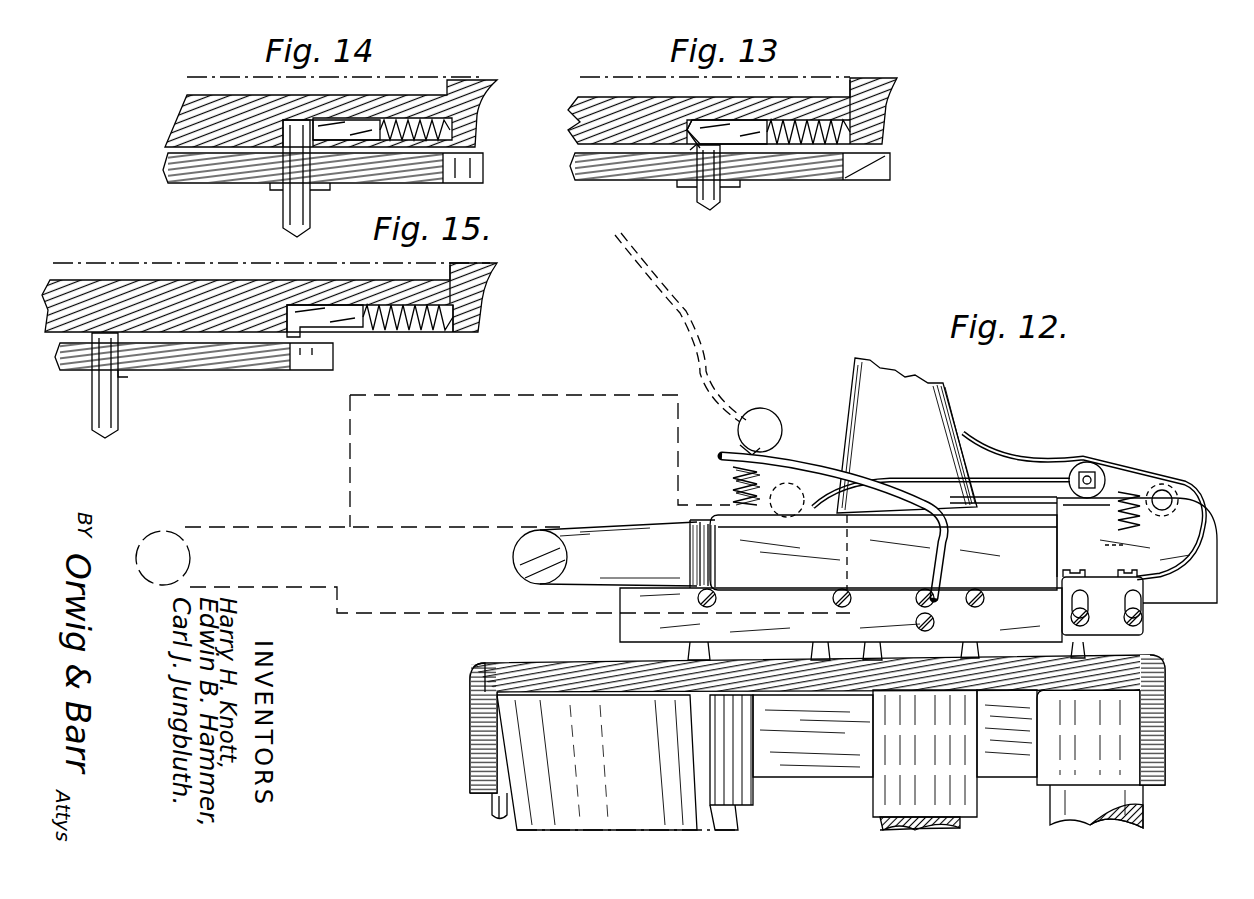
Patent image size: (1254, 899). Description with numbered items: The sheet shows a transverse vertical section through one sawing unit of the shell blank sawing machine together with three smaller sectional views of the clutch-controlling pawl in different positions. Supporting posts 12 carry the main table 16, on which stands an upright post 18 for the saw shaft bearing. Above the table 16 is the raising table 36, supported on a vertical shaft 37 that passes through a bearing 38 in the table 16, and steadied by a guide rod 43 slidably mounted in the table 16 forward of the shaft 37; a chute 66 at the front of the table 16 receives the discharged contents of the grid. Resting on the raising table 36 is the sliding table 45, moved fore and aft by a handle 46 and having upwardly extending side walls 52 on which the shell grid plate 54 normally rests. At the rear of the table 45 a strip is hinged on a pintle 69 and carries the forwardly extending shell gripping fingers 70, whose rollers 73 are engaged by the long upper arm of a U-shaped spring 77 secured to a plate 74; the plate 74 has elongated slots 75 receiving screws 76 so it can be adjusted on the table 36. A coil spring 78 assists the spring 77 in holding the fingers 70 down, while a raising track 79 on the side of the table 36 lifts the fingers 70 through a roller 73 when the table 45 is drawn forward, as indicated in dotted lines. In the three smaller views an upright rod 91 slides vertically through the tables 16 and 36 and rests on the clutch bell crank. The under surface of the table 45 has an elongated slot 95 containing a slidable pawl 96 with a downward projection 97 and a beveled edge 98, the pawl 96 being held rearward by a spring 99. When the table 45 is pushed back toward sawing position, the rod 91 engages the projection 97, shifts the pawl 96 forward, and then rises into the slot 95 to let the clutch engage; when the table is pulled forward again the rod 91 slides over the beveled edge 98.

In FIG. 12, the supporting post 12 is at (492, 810).
In FIG. 12, the table 16 is at (553, 663).
In FIG. 12, the upright post 18 is at (907, 435).
In FIG. 14, the raising table 36 is at (404, 172).
In FIG. 13, the raising table 36 is at (790, 177).
In FIG. 15, the raising table 36 is at (225, 358).
In FIG. 12, the raising table 36 is at (852, 624).
In FIG. 12, the vertical shaft 37 is at (880, 824).
In FIG. 12, the bearing 38 is at (925, 760).
In FIG. 12, the guide rod 43 is at (753, 797).
In FIG. 14, the sliding table 45 is at (207, 107).
In FIG. 13, the sliding table 45 is at (590, 112).
In FIG. 15, the sliding table 45 is at (93, 293).
In FIG. 12, the handle 46 is at (545, 548).
In FIG. 13, the side wall 52 is at (840, 87).
In FIG. 15, the side wall 52 is at (227, 263).
In FIG. 12, the side wall 52 is at (963, 550).
In FIG. 12, the shell grid plate 54 is at (608, 400).
In FIG. 12, the chute 66 is at (618, 762).
In FIG. 12, the pintle 69 is at (787, 514).
In FIG. 12, the shell gripping finger 70 is at (702, 352).
In FIG. 12, the roller 73 is at (1112, 452).
In FIG. 12, the plate 74 is at (1148, 628).
In FIG. 12, the elongated slot 75 is at (1140, 606).
In FIG. 12, the screw 76 is at (1106, 624).
In FIG. 12, the U-shaped spring 77 is at (1035, 463).
In FIG. 12, the coil spring 78 is at (730, 482).
In FIG. 12, the raising track 79 is at (797, 480).
In FIG. 14, the upright rod 91 is at (287, 212).
In FIG. 13, the upright rod 91 is at (723, 197).
In FIG. 15, the upright rod 91 is at (118, 397).
In FIG. 13, the elongated slot 95 is at (887, 102).
In FIG. 15, the elongated slot 95 is at (402, 330).
In FIG. 14, the slidable pawl 96 is at (350, 130).
In FIG. 13, the slidable pawl 96 is at (757, 130).
In FIG. 15, the slidable pawl 96 is at (350, 333).
In FIG. 13, the projection 97 is at (697, 147).
In FIG. 13, the beveled edge 98 is at (690, 140).
In FIG. 13, the spring 99 is at (880, 177).
In FIG. 15, the spring 99 is at (445, 330).